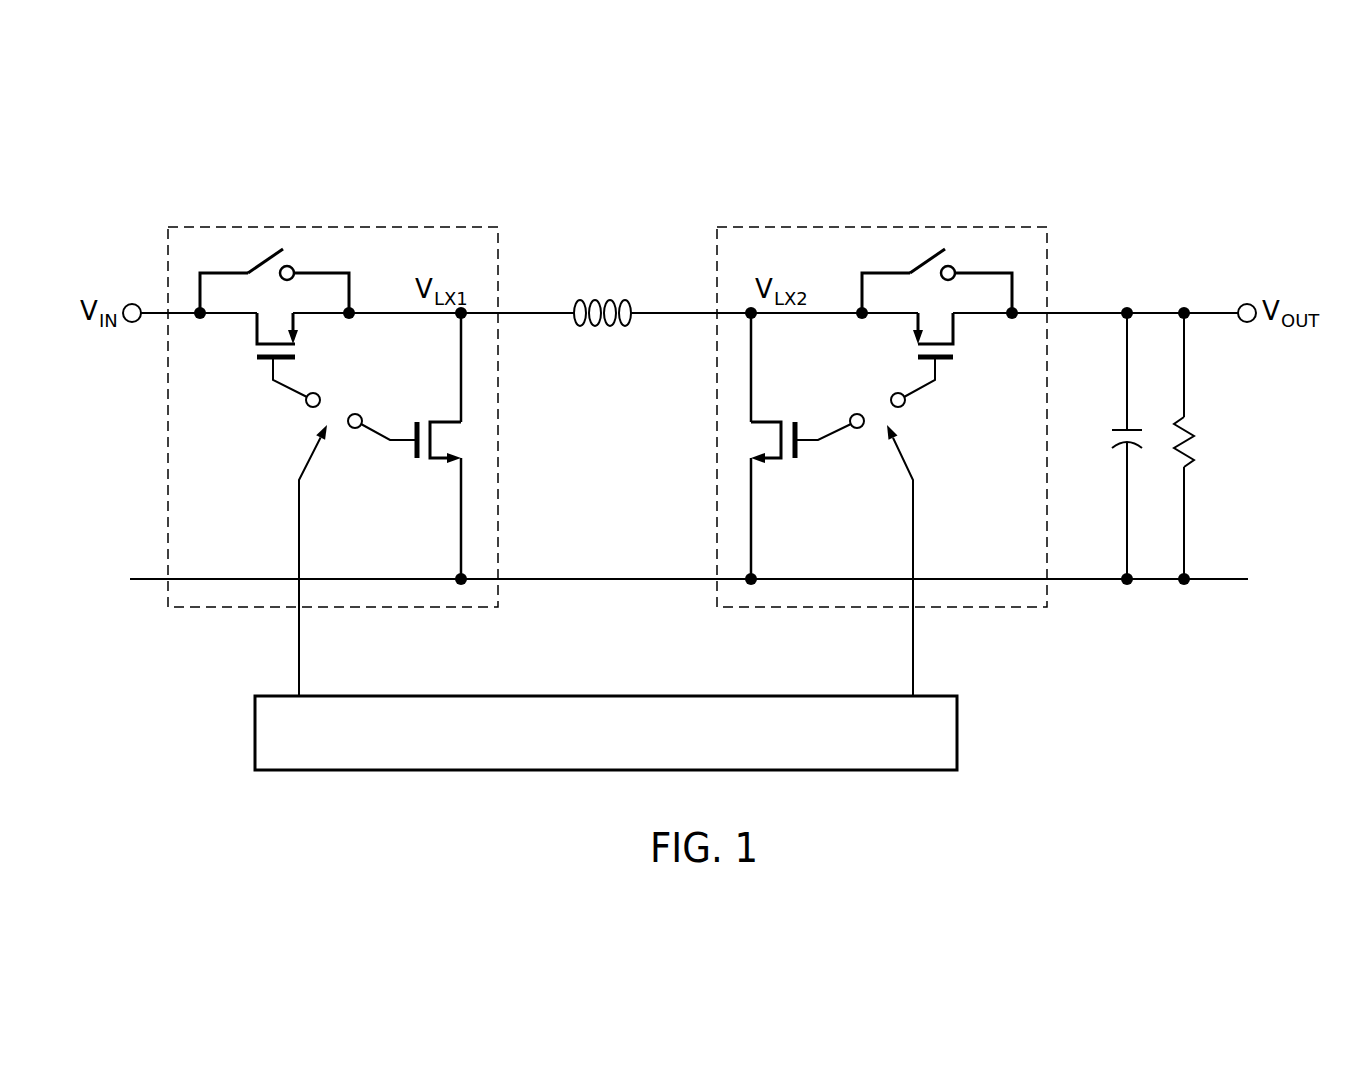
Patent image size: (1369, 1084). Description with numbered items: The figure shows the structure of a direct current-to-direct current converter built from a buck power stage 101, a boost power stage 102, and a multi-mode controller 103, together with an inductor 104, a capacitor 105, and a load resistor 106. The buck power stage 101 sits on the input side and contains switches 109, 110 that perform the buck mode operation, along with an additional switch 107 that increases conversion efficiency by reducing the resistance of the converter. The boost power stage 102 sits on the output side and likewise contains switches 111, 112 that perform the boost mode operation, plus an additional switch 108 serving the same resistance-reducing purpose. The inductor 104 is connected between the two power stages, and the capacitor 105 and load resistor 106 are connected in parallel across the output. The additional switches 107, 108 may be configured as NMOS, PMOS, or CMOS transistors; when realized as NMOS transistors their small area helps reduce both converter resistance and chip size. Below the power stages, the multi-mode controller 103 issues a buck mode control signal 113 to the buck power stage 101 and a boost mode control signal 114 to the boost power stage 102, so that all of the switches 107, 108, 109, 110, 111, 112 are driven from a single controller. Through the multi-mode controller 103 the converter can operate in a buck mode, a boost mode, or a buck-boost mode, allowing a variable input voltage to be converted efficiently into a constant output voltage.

The buck power stage 101 is at (335, 183).
The boost power stage 102 is at (888, 183).
The multi-mode controller 103 is at (605, 695).
The inductor 104 is at (601, 360).
The capacitor 105 is at (1094, 457).
The load resistor 106 is at (1214, 458).
The additional switch 107 is at (320, 251).
The additional switch 108 is at (990, 250).
The switch 109 is at (233, 369).
The switch 110 is at (428, 497).
The switch 111 is at (780, 497).
The switch 112 is at (985, 369).
The control signal 113 is at (485, 651).
The control signal 114 is at (1092, 651).